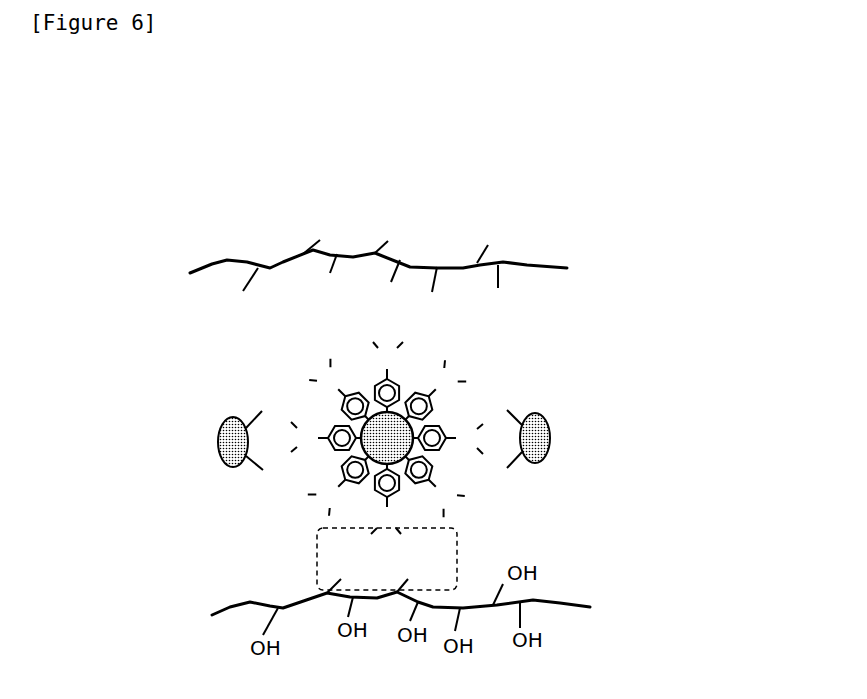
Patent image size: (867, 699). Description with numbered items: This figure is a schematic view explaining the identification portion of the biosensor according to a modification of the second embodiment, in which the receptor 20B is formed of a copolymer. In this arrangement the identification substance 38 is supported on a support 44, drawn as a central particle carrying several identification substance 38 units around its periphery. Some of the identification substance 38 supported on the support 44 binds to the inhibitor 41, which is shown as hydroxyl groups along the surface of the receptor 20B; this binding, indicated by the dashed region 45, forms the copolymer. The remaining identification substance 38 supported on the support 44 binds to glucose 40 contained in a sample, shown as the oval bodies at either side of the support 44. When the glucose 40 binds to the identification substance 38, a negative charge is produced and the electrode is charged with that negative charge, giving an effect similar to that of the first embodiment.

The receptor 20B is at (217, 238).
The inhibitor 41 is at (281, 262).
The identification substance 38 is at (462, 365).
The glucose 40 is at (561, 422).
The support 44 is at (413, 452).
The copolymer bond 45 is at (317, 563).